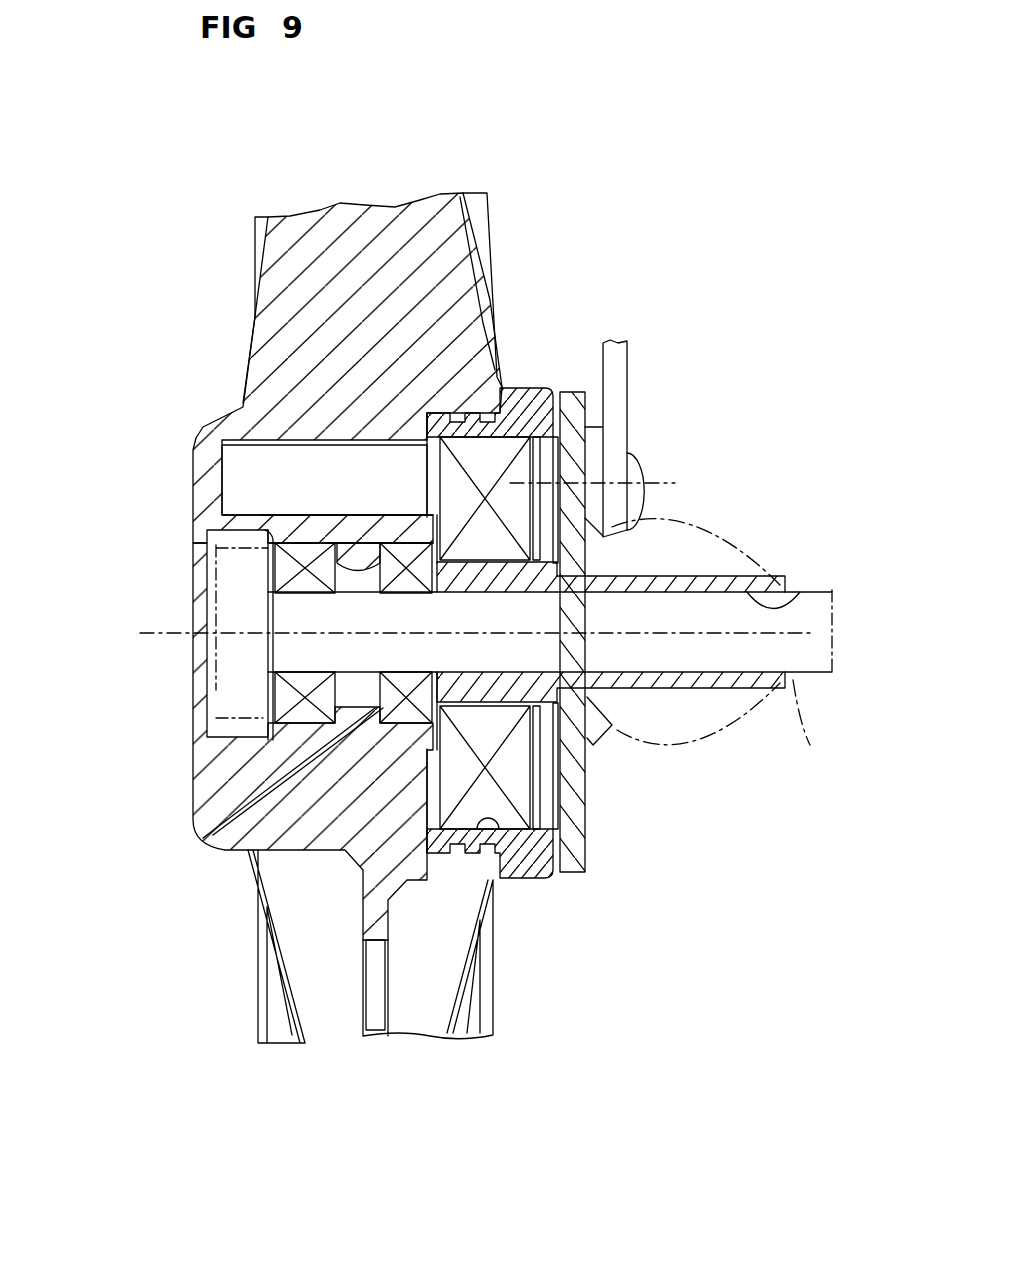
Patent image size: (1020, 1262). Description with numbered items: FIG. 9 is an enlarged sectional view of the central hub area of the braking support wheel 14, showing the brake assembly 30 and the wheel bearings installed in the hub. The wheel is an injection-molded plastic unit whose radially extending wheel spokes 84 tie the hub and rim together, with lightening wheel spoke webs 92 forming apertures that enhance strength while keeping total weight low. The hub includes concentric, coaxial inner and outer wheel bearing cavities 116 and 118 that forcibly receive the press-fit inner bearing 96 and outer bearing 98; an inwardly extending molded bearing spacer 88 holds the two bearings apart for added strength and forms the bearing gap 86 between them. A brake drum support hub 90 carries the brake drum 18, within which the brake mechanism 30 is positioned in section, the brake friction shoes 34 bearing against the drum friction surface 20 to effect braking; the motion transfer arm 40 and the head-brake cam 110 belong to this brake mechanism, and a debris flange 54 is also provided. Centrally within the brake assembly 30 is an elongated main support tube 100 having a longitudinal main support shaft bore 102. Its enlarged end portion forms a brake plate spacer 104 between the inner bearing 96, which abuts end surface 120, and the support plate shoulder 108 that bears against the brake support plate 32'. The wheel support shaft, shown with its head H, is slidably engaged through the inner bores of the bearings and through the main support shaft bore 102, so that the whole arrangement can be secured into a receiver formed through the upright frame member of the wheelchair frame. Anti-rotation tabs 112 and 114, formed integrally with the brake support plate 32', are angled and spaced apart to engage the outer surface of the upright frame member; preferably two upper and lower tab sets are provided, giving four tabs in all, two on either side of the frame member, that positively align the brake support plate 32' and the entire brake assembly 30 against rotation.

The braking support wheel 14 is at (762, 518).
The brake drum 18 is at (503, 387).
The drum friction surface 20 is at (500, 820).
The brake assembly 30 is at (632, 400).
The brake support plate 32' is at (676, 659).
The brake friction shoe 34 is at (553, 840).
The motion transfer arm 40 is at (628, 378).
The debris flange 54 is at (586, 820).
The wheel spoke 84 is at (450, 323).
The bearing gap 86 is at (347, 657).
The bearing spacer 88 is at (353, 547).
The brake drum support hub 90 is at (493, 880).
The wheel spoke web 92 is at (363, 990).
The inner bearing 96 is at (210, 840).
The outer bearing 98 is at (278, 570).
The main support tube 100 is at (723, 690).
The main support shaft bore 102 is at (795, 592).
The brake plate spacer 104 is at (492, 560).
The support plate shoulder 108 is at (590, 693).
The head-brake cam 110 is at (643, 475).
The anti-rotation tab 112 is at (652, 545).
The anti-rotation tab 114 is at (612, 730).
The inner wheel bearing cavity 116 is at (275, 545).
The outer wheel bearing cavity 118 is at (230, 715).
The end surface 120 is at (437, 580).
The head H is at (217, 660).